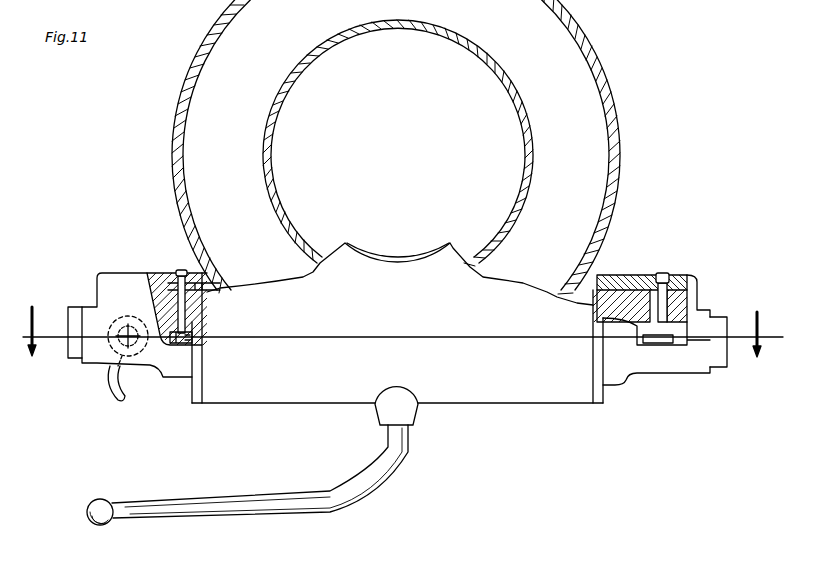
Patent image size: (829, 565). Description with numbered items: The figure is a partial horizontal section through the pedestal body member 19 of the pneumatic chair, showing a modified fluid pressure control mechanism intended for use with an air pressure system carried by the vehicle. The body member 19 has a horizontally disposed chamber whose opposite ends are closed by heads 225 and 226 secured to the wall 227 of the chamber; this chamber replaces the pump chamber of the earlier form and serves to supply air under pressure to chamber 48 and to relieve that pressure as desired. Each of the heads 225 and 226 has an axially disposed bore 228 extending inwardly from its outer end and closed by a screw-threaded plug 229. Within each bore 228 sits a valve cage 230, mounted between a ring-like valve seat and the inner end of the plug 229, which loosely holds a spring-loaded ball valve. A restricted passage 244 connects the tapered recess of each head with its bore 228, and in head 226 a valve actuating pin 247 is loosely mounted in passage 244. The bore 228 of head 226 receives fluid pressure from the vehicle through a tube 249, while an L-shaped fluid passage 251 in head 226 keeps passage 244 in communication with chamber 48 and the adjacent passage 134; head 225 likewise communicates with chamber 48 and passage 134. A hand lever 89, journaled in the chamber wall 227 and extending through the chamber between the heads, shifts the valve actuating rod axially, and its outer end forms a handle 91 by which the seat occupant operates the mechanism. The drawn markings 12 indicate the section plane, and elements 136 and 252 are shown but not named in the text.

The body member 19 is at (600, 73).
The chamber 48 is at (590, 180).
The passage 134 is at (220, 288).
The flange plate 136 is at (620, 285).
The L-shaped fluid passage 251 is at (182, 302).
The bolt 252 is at (673, 283).
The plug 229 is at (73, 317).
The bore 228 is at (688, 330).
The head 226 is at (97, 358).
The restricted passage 244 is at (176, 344).
The valve actuating pin 247 is at (188, 377).
The tube 249 is at (113, 397).
The wall 227 is at (507, 395).
The valve cage 230 is at (655, 344).
The head 225 is at (695, 360).
The hand lever 89 is at (313, 497).
The handle 91 is at (137, 513).
The section line 12 is at (395, 345).